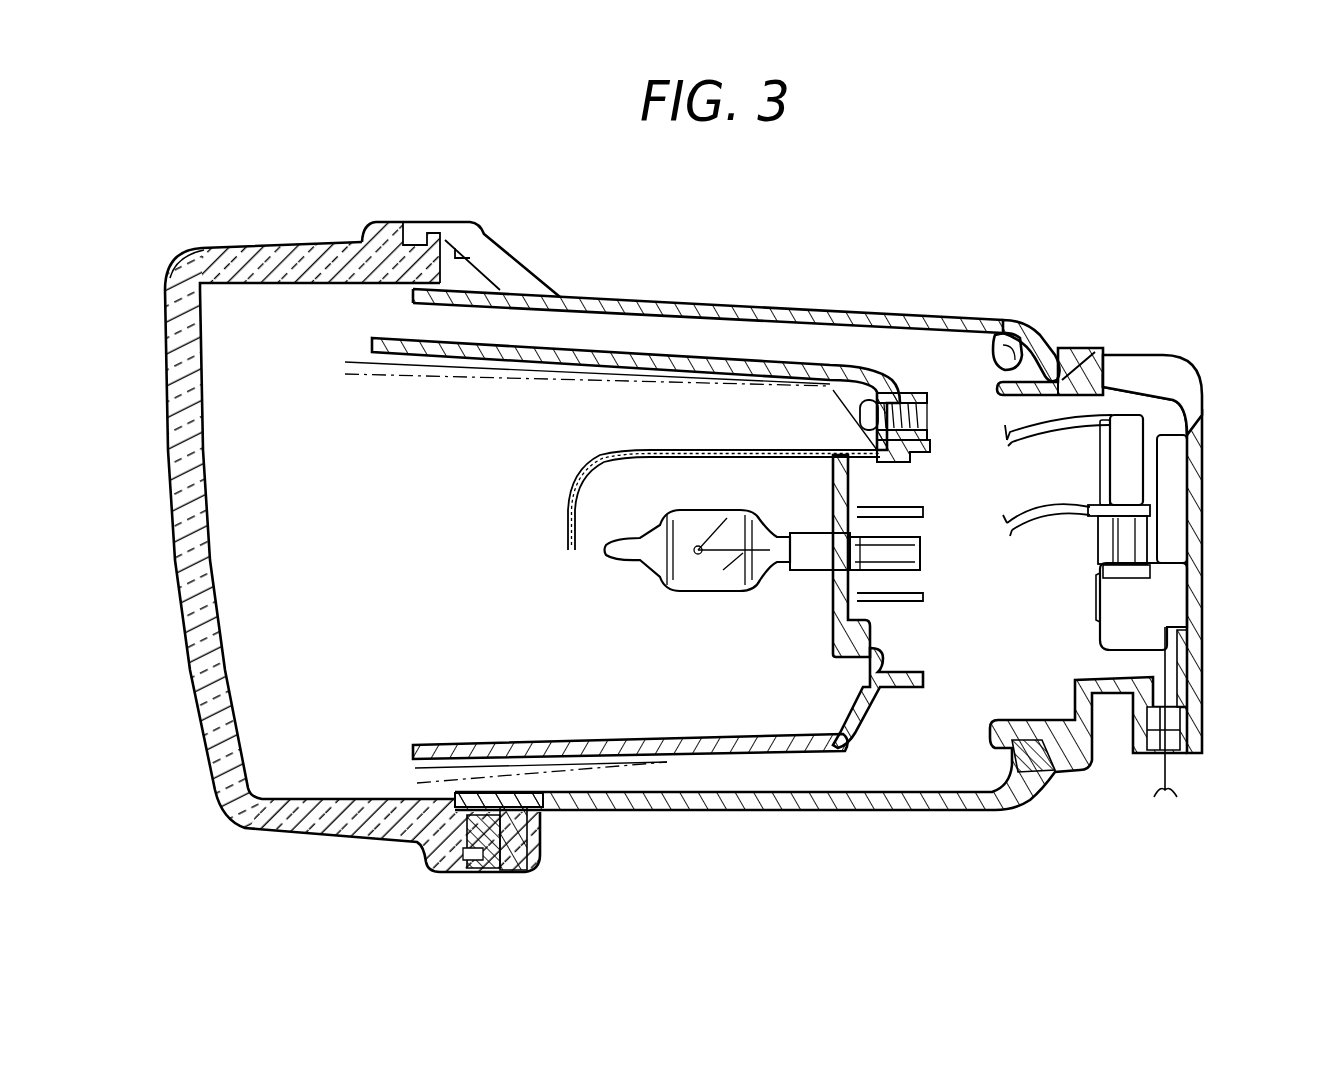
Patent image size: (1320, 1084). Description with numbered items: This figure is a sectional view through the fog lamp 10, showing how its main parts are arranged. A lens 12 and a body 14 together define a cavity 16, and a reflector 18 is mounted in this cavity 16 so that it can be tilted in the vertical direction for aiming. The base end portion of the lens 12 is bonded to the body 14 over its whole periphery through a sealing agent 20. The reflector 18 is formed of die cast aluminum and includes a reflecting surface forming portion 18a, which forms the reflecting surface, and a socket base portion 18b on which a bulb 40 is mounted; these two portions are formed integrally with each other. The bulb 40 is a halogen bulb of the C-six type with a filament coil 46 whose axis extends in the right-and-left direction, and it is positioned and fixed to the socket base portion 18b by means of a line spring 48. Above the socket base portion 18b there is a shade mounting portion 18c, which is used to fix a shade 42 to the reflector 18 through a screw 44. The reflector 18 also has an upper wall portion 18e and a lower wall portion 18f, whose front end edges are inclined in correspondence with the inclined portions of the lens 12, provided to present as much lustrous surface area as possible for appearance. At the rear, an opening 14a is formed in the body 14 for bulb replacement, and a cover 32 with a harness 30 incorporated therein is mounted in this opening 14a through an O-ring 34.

The fog lamp 10 is at (880, 266).
The lens 12 is at (301, 238).
The body 14 is at (706, 287).
The opening 14a is at (1005, 318).
The cavity 16 is at (352, 560).
The reflector 18 is at (658, 344).
The reflecting surface forming portion 18a is at (862, 722).
The socket base portion 18b is at (830, 640).
The shade mounting portion 18c is at (905, 378).
The upper wall portion 18e is at (612, 372).
The lower wall portion 18f is at (556, 743).
The sealing agent 20 is at (497, 875).
The harness 30 is at (1120, 600).
The cover 32 is at (1210, 545).
The O-ring 34 is at (1064, 348).
The bulb 40 is at (685, 596).
The shade 42 is at (570, 512).
The screw 44 is at (862, 415).
The filament coil 46 is at (727, 518).
The line spring 48 is at (908, 508).